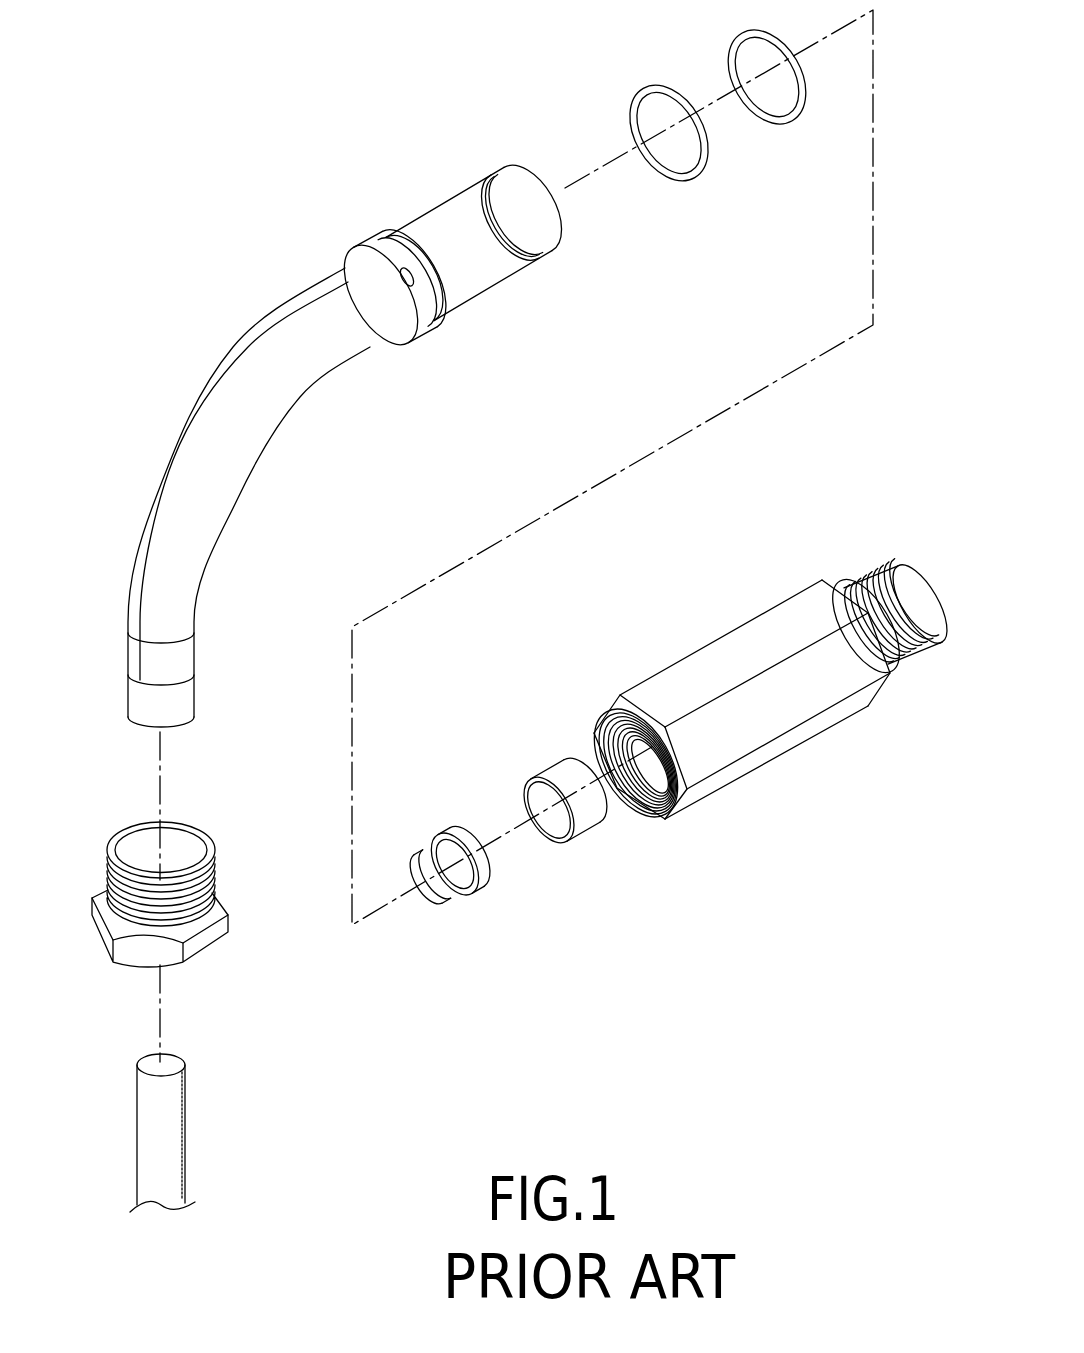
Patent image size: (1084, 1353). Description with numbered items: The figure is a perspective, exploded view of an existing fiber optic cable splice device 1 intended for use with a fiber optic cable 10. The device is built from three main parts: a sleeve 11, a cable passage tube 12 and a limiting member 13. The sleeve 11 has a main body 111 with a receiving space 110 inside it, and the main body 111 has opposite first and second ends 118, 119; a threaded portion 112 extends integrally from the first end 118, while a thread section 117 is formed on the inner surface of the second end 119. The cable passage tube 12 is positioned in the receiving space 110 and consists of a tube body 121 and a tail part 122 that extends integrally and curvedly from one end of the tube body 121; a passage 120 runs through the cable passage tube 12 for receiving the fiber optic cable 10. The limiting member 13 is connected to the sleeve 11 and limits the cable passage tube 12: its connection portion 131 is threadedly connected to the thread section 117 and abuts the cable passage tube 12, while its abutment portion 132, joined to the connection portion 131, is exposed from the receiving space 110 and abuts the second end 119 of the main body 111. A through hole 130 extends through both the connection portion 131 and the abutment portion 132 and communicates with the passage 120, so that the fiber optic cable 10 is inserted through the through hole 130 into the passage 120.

The fiber optic cable splice device 1 is at (250, 92).
The fiber optic cable 10 is at (172, 1148).
The sleeve 11 is at (755, 790).
The receiving space 110 is at (622, 745).
The main body 111 is at (722, 640).
The threaded portion 112 is at (900, 562).
The thread section 117 is at (633, 818).
The first end 118 is at (810, 585).
The second end 119 is at (650, 692).
The cable passage tube 12 is at (198, 243).
The passage 120 is at (183, 460).
The tube body 121 is at (453, 207).
The tail part 122 is at (181, 386).
The limiting member 13 is at (114, 982).
The through hole 130 is at (140, 843).
The connection portion 131 is at (217, 880).
The abutment portion 132 is at (217, 912).